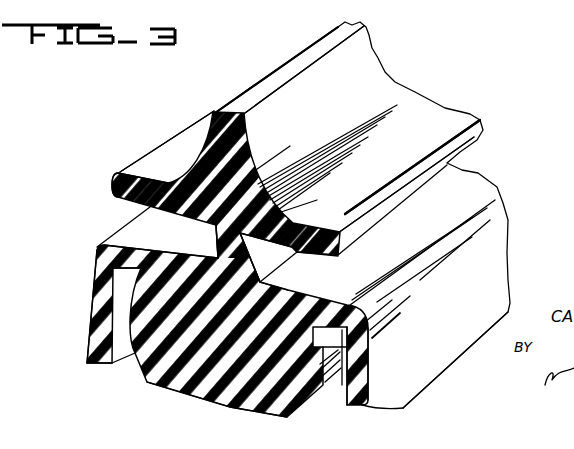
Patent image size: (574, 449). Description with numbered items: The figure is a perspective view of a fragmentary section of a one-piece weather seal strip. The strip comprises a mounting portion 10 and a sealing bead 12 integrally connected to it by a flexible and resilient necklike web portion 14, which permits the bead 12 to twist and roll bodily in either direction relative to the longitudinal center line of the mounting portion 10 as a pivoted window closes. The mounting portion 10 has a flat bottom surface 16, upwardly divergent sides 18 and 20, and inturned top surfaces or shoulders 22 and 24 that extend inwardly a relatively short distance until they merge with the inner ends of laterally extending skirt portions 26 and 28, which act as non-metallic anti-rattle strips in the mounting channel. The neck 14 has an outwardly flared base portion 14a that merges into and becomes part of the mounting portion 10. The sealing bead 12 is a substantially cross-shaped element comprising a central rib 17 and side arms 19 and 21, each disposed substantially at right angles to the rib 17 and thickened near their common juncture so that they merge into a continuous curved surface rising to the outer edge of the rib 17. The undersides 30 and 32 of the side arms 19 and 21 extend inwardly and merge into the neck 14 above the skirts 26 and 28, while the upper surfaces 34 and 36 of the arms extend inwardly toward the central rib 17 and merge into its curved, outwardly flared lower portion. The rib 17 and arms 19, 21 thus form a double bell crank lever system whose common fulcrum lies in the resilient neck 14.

The mounting portion 10 is at (250, 318).
The sealing bead 12 is at (189, 150).
The necklike web portion 14 is at (213, 238).
The outwardly flared base portion 14a is at (245, 258).
The flat bottom surface 16 is at (197, 396).
The central rib 17 is at (331, 43).
The upwardly divergent side 18 is at (133, 358).
The side arm 19 is at (112, 182).
The upwardly divergent side 20 is at (322, 385).
The side arm 21 is at (470, 138).
The inturned top surface or shoulder 22 is at (90, 308).
The inturned top surface or shoulder 24 is at (368, 348).
The skirt portion 26 is at (84, 365).
The skirt portion 28 is at (418, 368).
The underside of side arm 30 is at (197, 221).
The underside of side arm 32 is at (292, 246).
The upper surface of side arm 34 is at (173, 163).
The upper surface of side arm 36 is at (380, 100).